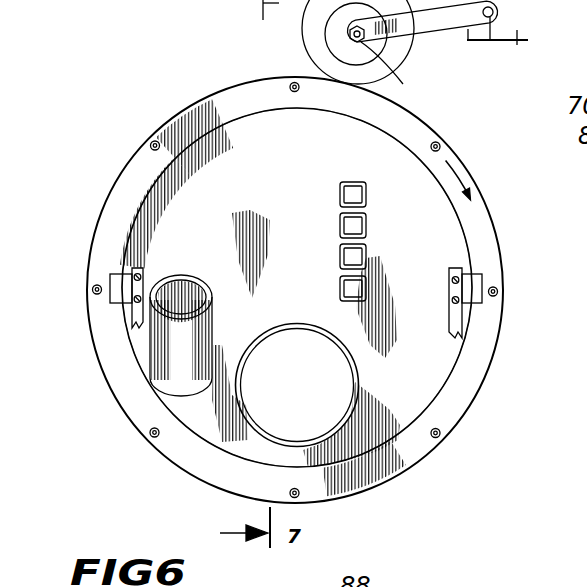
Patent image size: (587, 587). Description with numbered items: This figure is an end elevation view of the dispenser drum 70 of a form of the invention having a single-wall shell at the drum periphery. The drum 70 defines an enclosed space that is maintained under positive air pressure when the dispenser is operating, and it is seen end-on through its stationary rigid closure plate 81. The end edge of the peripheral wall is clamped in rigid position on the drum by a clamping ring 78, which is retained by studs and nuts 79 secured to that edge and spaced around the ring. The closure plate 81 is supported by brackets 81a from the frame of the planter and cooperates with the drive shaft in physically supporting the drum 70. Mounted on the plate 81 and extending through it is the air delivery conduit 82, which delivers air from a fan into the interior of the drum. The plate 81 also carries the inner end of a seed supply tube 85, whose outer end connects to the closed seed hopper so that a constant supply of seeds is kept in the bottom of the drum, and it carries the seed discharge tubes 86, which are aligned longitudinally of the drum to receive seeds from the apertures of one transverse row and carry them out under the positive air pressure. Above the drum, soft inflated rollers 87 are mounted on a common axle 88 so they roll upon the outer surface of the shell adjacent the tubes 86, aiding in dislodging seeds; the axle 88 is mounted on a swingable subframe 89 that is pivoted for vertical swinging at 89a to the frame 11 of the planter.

The dispenser drum 70 is at (149, 107).
The clamping ring 78 is at (462, 401).
The studs and nuts 79 is at (496, 287).
The stationary rigid closure plate 81 is at (299, 164).
The brackets 81a is at (456, 318).
The air delivery conduit 82 is at (297, 323).
The seed supply tube 85 is at (186, 276).
The seed discharge tubes 86 is at (367, 199).
The inflated rollers 87 is at (308, 42).
The axle 88 is at (392, 73).
The swingable subframe 89 is at (441, 26).
The pivot 89a is at (490, 28).
The frame 11 is at (517, 40).